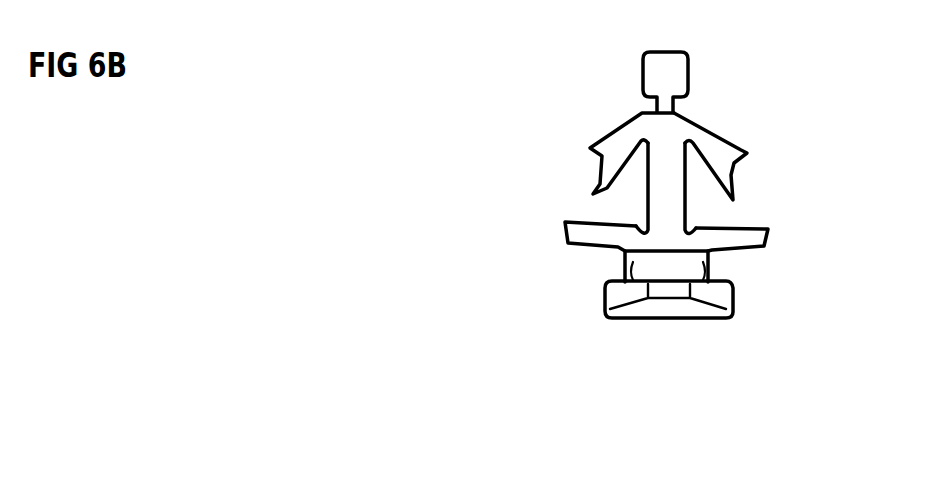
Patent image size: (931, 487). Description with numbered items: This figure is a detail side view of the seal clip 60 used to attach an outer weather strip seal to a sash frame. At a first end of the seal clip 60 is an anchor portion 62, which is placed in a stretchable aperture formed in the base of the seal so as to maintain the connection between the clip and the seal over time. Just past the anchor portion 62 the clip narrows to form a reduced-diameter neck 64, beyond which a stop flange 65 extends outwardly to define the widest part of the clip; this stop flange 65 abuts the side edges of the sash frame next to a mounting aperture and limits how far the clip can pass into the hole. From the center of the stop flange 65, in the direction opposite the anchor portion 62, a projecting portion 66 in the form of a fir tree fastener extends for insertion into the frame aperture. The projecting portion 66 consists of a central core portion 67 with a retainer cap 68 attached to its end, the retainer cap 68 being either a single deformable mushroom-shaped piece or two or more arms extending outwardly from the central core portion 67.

The seal clip 60 is at (478, 185).
The anchor portion 62 is at (650, 322).
The neck 64 is at (717, 270).
The stop flange 65 is at (770, 235).
The projecting portion 66 is at (578, 125).
The central core portion 67 is at (686, 201).
The retainer cap 68 is at (730, 138).